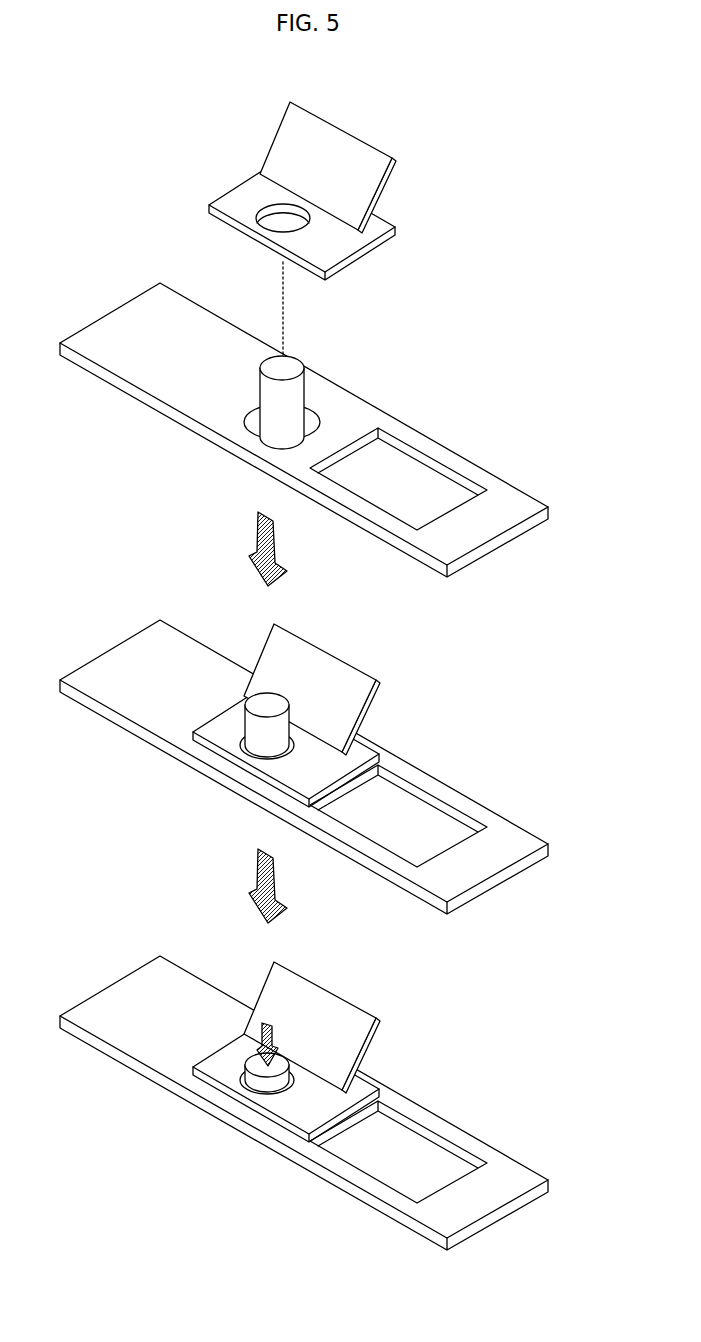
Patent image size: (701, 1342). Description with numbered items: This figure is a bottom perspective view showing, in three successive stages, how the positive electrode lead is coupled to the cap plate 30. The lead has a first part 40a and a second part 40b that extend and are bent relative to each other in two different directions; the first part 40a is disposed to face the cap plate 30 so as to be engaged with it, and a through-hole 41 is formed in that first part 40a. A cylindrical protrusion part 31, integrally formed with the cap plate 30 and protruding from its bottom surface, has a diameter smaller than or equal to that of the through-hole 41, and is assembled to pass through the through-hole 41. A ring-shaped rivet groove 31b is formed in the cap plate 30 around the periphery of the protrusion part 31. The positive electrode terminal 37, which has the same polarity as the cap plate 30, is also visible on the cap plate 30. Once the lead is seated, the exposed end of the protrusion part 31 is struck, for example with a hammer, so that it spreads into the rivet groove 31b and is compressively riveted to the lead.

The cap plate 30 is at (502, 508).
The protrusion part 31 is at (292, 365).
The rivet groove 31b is at (312, 408).
The positive electrode terminal 37 is at (417, 480).
The first part 40a is at (386, 225).
The second part 40b is at (335, 147).
The through-hole 41 is at (273, 221).